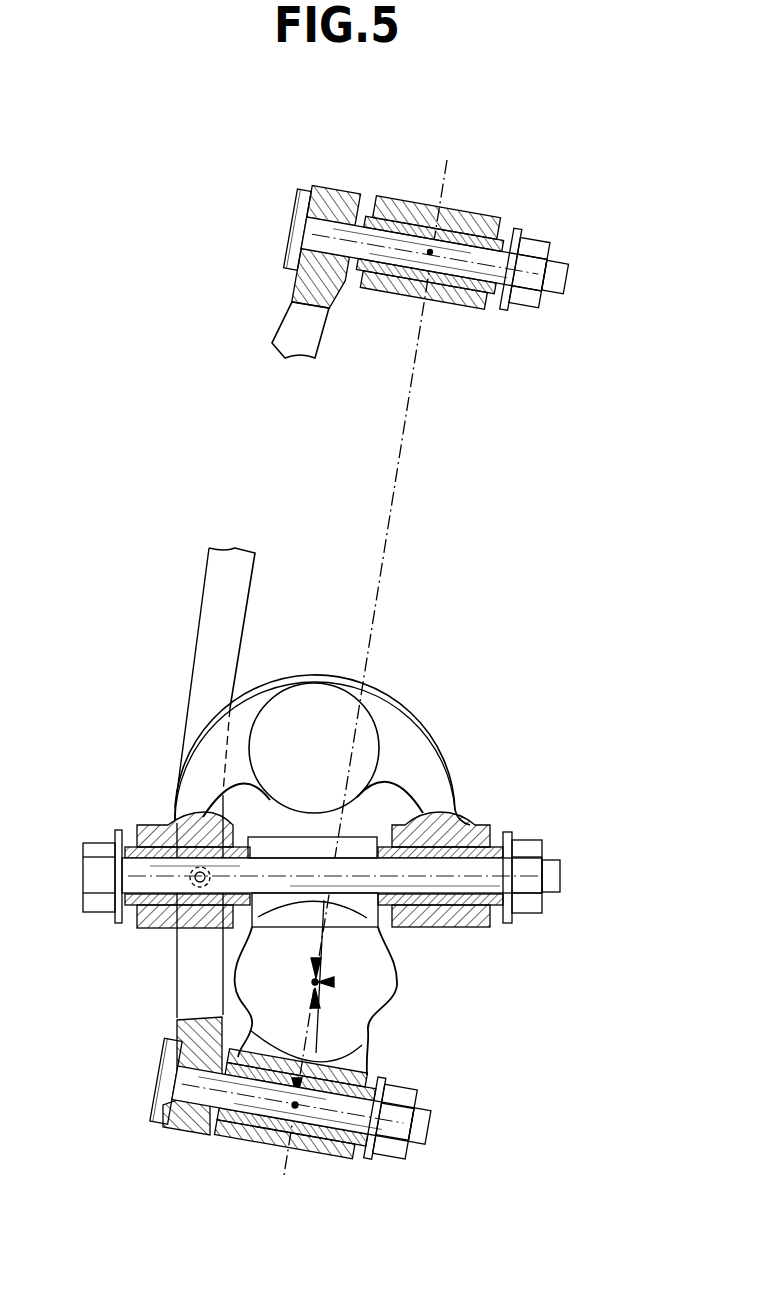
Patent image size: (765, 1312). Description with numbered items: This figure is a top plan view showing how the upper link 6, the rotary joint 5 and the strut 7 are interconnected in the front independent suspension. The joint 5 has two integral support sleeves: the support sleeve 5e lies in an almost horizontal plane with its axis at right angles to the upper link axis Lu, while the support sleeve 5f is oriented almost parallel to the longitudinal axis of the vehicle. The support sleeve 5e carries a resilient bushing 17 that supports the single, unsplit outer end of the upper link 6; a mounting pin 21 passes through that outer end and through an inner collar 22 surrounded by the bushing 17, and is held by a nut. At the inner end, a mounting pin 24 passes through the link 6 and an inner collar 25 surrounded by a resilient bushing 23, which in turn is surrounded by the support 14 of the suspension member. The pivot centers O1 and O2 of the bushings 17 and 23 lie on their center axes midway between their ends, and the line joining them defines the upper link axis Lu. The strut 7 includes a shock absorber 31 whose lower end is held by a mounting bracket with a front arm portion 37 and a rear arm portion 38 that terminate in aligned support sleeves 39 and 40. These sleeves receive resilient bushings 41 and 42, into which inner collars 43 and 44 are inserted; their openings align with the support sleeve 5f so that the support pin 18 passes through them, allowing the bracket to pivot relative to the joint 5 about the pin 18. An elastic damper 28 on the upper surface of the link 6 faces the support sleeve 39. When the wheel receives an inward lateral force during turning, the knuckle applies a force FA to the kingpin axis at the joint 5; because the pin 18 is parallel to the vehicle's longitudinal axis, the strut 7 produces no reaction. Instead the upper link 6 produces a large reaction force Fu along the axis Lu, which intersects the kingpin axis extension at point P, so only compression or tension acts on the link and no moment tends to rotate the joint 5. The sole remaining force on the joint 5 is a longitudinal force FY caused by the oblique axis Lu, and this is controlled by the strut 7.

The rotary joint 5 is at (396, 1015).
The support sleeve 5e is at (243, 1150).
The support sleeve 5f is at (272, 846).
The upper link 6 is at (288, 316).
The strut 7 is at (384, 727).
The support 14 is at (473, 207).
The resilient bushing 17 is at (337, 1152).
The support pin 18 is at (428, 882).
The mounting pin 21 is at (160, 1128).
The inner collar 22 is at (215, 1130).
The resilient bushing 23 is at (390, 195).
The mounting pin 24 is at (312, 235).
The inner collar 25 is at (510, 236).
The elastic damper 28 is at (190, 880).
The shock absorber 31 is at (318, 700).
The front arm portion 37 is at (210, 740).
The rear arm portion 38 is at (420, 745).
The support sleeve 39 is at (158, 824).
The support sleeve 40 is at (472, 824).
The resilient bushing 41 is at (168, 930).
The resilient bushing 42 is at (486, 926).
The inner collar 43 is at (127, 850).
The inner collar 44 is at (507, 847).
The upper link axis Lu is at (378, 598).
The pivot center O1 is at (295, 1105).
The pivot center O2 is at (430, 252).
The intersection point P is at (312, 982).
The reaction force Fu is at (318, 940).
The longitudinal force FY is at (326, 978).
The lateral force FA is at (318, 1014).